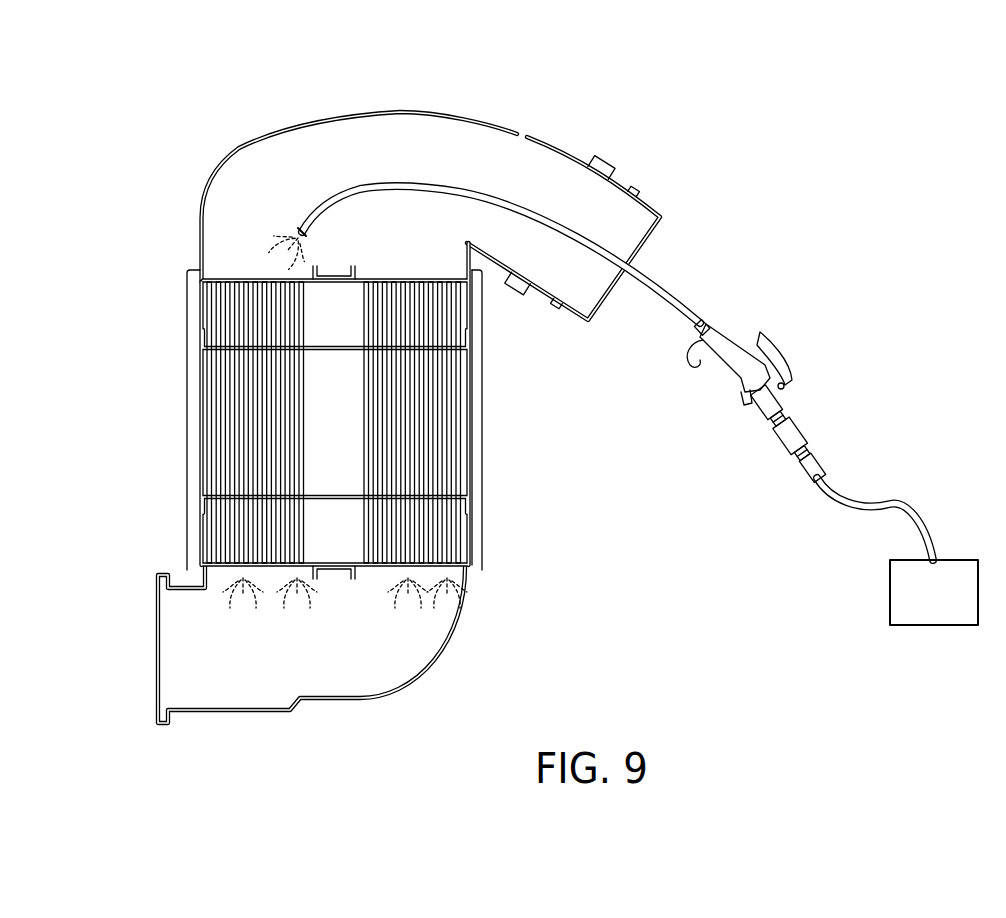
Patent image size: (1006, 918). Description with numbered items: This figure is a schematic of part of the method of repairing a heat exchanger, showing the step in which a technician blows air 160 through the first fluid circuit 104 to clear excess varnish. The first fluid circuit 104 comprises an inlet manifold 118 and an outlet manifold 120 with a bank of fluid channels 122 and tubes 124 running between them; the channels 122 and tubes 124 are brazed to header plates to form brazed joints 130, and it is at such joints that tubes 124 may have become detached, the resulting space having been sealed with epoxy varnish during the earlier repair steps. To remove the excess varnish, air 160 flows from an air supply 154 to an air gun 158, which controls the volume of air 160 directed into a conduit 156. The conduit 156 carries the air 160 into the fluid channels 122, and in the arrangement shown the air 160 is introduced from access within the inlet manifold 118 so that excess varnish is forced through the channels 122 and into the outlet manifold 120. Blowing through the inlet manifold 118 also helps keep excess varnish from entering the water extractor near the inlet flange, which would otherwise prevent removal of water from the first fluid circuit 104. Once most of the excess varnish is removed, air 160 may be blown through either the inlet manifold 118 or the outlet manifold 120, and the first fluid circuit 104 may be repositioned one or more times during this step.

The first fluid circuit 104 is at (408, 112).
The inlet manifold 118 is at (518, 137).
The outlet manifold 120 is at (419, 663).
The fluid channel 122 is at (458, 401).
The tube 124 is at (458, 456).
The brazed joint 130 is at (420, 279).
The air supply 154 is at (950, 560).
The conduit 156 is at (660, 284).
The air gun 158 is at (786, 362).
The air 160 is at (294, 238).